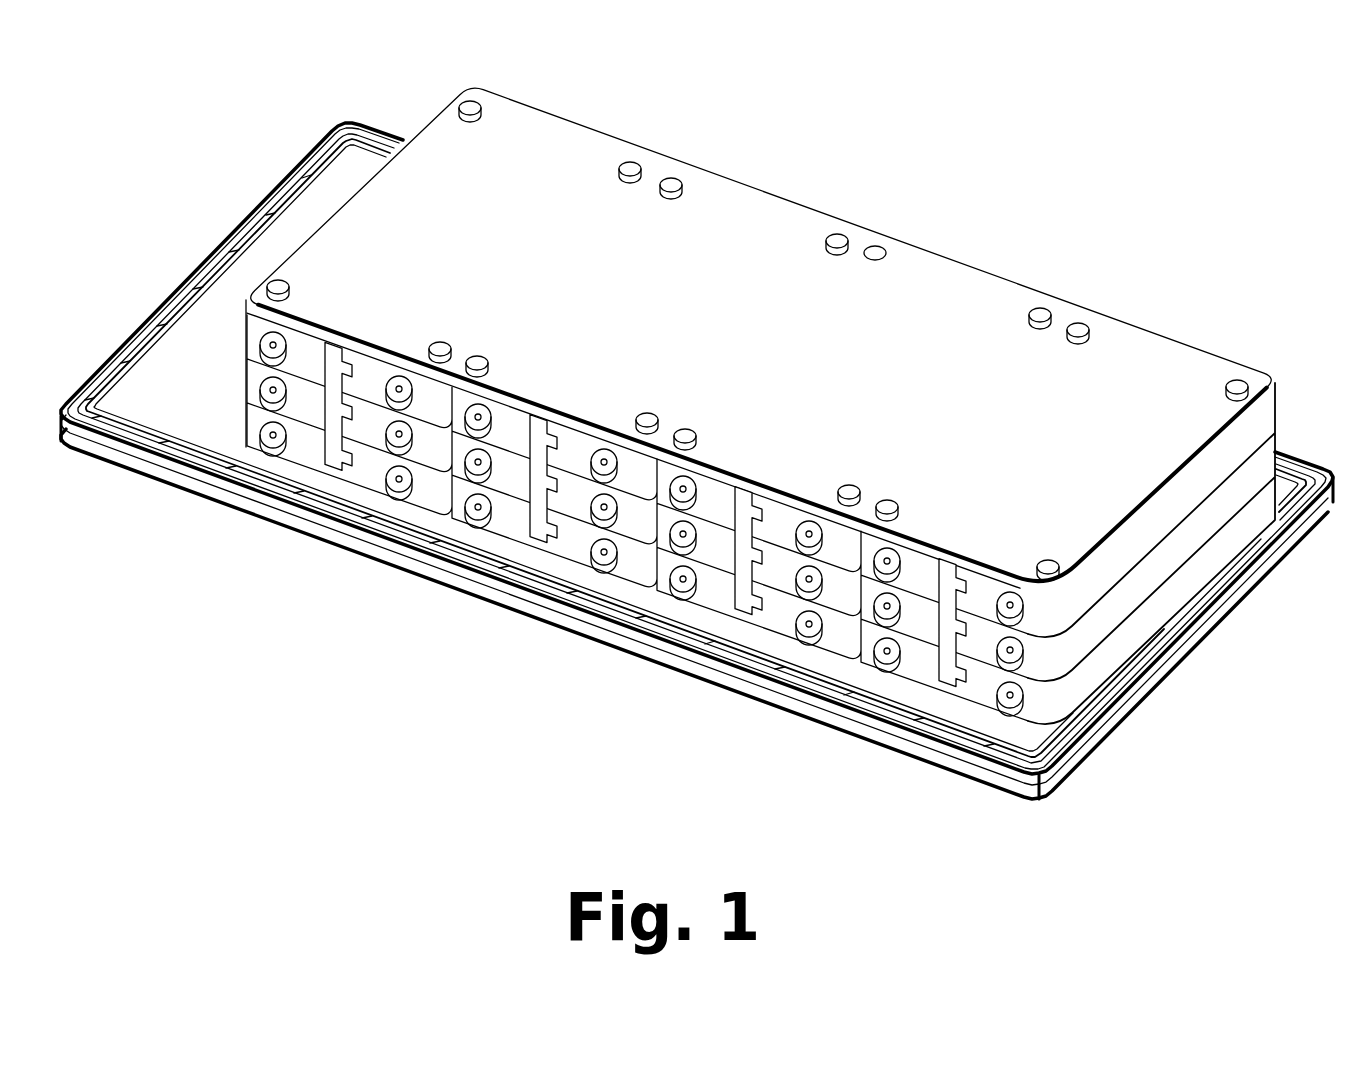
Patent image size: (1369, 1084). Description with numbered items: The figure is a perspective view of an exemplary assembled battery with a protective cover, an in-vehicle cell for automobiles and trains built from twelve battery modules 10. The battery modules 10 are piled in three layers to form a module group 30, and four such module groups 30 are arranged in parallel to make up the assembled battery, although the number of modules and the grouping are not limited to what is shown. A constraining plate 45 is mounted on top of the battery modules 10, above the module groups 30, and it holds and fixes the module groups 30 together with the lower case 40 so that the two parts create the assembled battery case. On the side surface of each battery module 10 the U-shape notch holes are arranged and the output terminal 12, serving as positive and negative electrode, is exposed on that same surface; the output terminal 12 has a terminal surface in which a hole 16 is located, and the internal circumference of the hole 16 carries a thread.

The battery module 10 is at (312, 410).
The output terminal 12 is at (1055, 705).
The hole 16 is at (1008, 717).
The module group 30 is at (131, 547).
The lower case 40 is at (270, 205).
The constraining plate 45 is at (1153, 343).